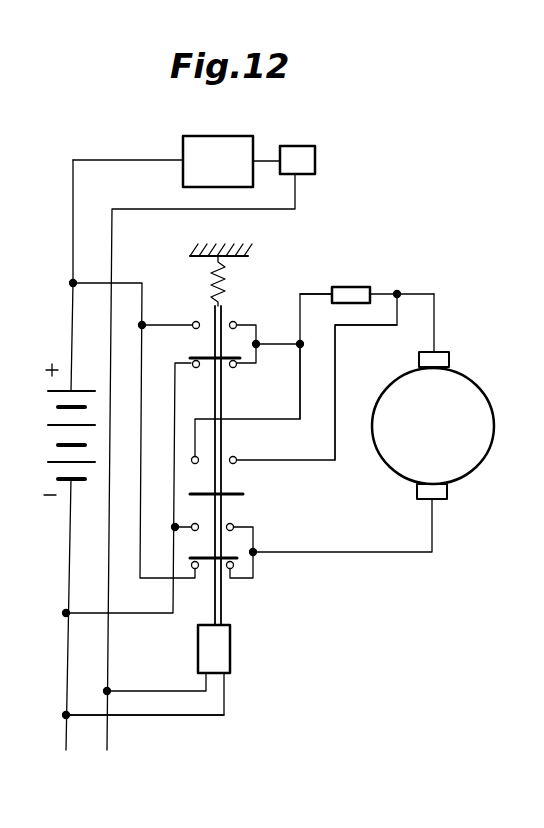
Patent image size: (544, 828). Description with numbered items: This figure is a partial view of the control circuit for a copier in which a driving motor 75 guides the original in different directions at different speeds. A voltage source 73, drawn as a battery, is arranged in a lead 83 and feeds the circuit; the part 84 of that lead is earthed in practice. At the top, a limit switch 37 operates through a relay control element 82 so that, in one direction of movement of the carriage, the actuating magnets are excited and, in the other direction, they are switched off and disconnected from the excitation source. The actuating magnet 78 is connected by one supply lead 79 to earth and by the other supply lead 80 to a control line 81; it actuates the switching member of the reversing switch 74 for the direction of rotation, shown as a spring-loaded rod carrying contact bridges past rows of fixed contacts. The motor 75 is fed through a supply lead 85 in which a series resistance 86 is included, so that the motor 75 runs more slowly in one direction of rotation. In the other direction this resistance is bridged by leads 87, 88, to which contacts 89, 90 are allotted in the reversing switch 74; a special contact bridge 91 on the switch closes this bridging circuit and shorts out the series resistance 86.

The limit switch 37 is at (320, 161).
The voltage source 73 is at (56, 429).
The reversing switch 74 is at (235, 434).
The driving motor 75 is at (443, 428).
The actuating magnet 78 is at (239, 649).
The supply lead 79 is at (148, 737).
The supply lead 80 is at (156, 714).
The control line 81 is at (105, 516).
The relay control element 82 is at (213, 158).
The lead 83 is at (47, 221).
The earthed part of lead 84 is at (145, 678).
The supply lead of the motor 85 is at (316, 273).
The series resistance 86 is at (358, 276).
The bridging lead 87 is at (277, 381).
The bridging lead 88 is at (366, 392).
The contact 89 is at (192, 403).
The contact 90 is at (259, 449).
The contact bridge 91 is at (243, 531).